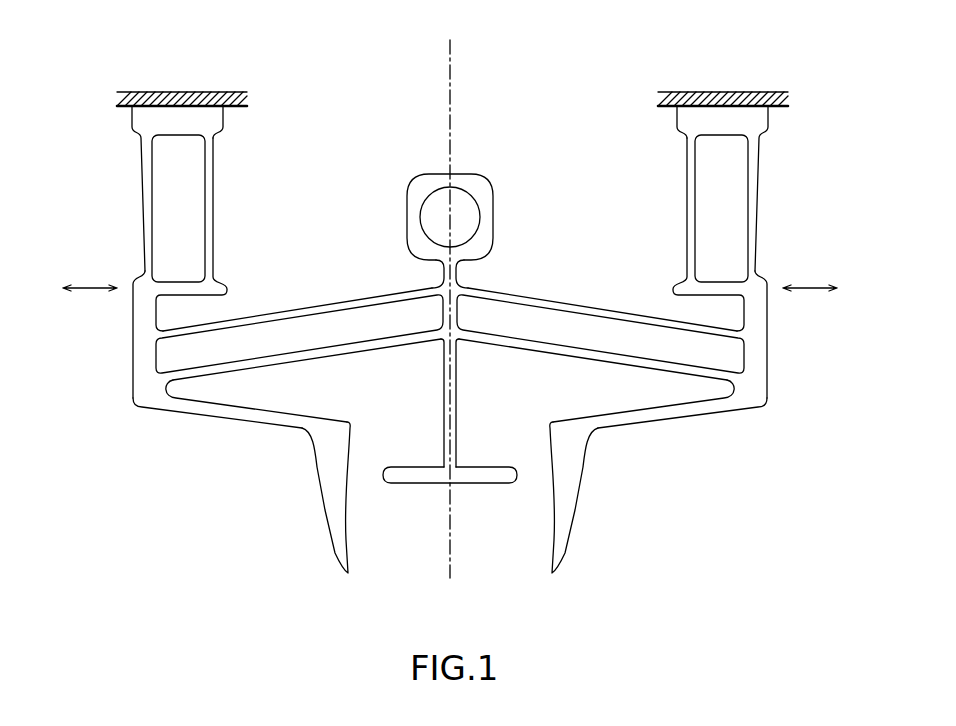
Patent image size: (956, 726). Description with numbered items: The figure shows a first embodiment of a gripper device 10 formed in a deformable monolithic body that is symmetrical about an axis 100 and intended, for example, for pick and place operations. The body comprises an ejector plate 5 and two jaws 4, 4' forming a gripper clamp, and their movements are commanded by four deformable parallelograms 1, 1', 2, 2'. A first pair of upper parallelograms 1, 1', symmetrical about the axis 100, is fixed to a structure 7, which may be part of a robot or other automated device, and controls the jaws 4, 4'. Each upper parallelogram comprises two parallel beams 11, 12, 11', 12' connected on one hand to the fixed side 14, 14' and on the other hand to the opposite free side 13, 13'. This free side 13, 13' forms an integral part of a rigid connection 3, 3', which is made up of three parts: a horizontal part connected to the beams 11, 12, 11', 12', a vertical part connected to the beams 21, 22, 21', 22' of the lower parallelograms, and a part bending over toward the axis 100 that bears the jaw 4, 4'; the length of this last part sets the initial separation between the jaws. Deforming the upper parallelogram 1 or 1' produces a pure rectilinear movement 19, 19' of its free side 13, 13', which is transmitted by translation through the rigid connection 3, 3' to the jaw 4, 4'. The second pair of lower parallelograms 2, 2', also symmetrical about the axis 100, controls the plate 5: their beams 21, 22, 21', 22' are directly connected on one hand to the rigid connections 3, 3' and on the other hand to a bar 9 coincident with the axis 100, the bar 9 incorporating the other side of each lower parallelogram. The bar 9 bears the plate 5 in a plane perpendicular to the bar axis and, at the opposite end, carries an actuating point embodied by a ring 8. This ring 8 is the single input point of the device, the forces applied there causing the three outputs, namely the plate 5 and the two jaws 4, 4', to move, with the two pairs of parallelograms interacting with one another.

The first upper parallelogram 1 is at (186, 252).
The second upper parallelogram 1' is at (725, 252).
The lower parallelogram 2 is at (299, 324).
The lower parallelogram 2' is at (600, 317).
The rigid connection 3 is at (237, 412).
The rigid connection 3' is at (660, 426).
The jaw 4 is at (313, 497).
The jaw 4' is at (592, 497).
The ejector plate 5 is at (470, 485).
The structure 7 is at (183, 93).
The ring 8 is at (493, 195).
The bar 9 is at (443, 393).
The gripper device 10 is at (123, 478).
The beam 11 is at (117, 188).
The beam 11' is at (695, 188).
The beam 12 is at (217, 208).
The beam 12' is at (765, 208).
The free side 13 is at (208, 234).
The free side 13' is at (692, 234).
The fixed side 14 is at (249, 138).
The fixed side 14' is at (756, 136).
The pure rectilinear movement 19 is at (90, 322).
The pure rectilinear movement 19' is at (814, 322).
The beam 21 is at (297, 292).
The beam 21' is at (602, 281).
The beam 22 is at (307, 346).
The beam 22' is at (593, 346).
The axis of symmetry 100 is at (453, 68).